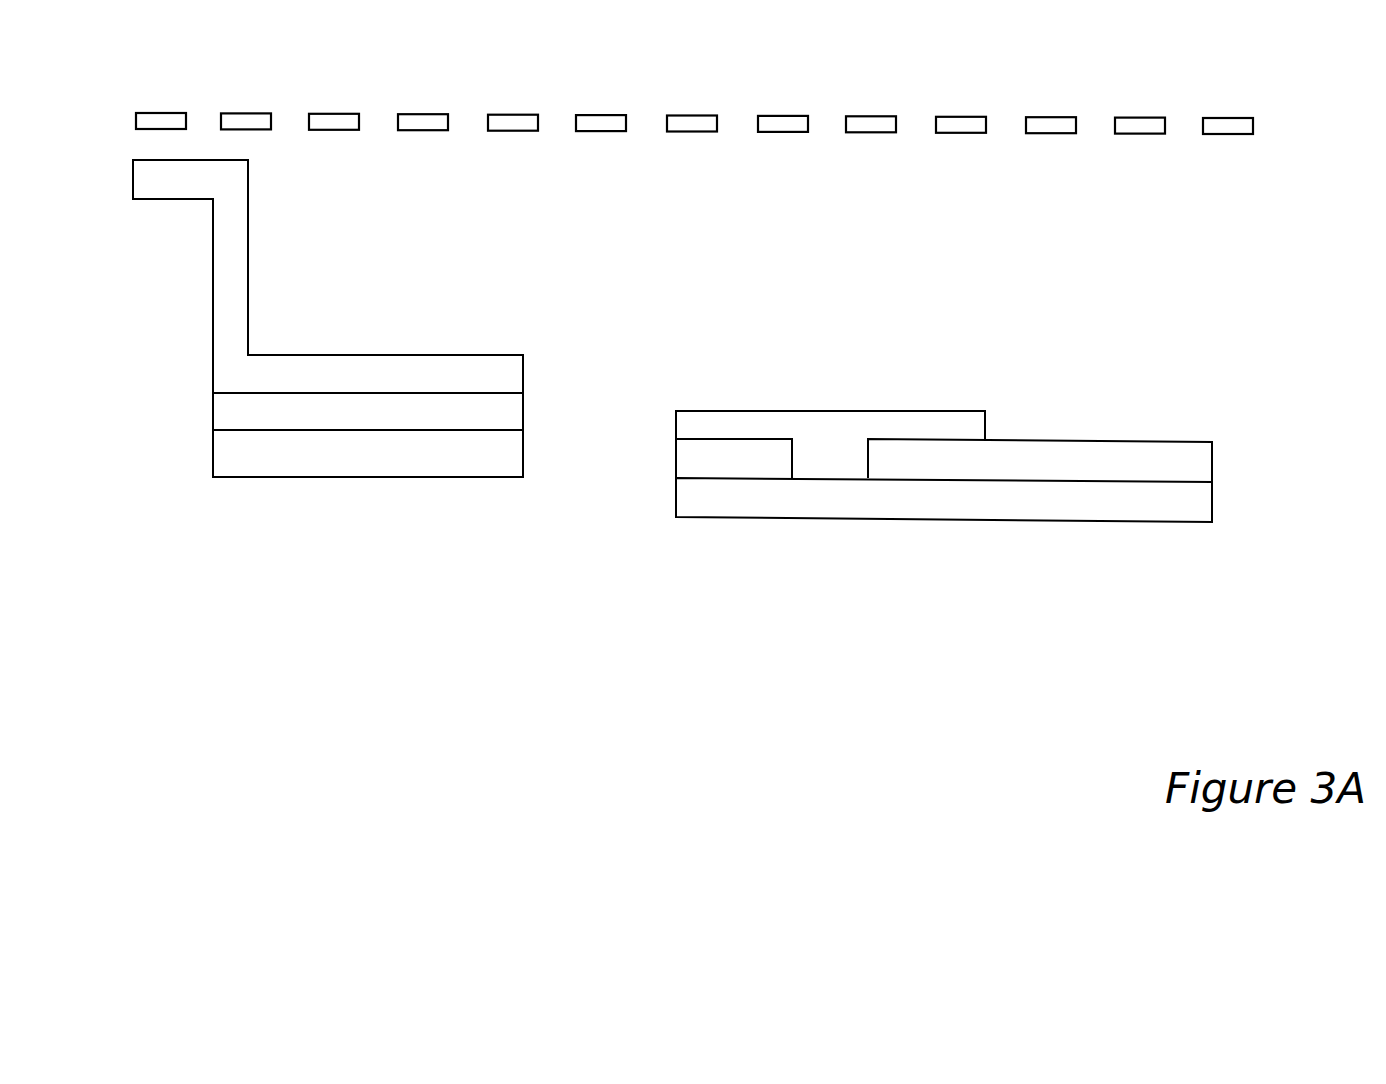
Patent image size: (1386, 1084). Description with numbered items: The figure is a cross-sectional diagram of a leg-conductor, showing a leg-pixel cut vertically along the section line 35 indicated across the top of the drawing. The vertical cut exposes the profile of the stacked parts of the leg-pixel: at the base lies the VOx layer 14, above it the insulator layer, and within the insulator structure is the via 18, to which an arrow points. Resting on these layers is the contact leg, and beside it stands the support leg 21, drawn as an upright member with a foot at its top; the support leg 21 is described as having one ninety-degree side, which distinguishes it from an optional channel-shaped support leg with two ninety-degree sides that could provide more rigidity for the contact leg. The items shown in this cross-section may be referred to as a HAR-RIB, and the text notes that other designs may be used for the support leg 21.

The VOx layer 14 is at (945, 512).
The via 18 is at (770, 462).
The support leg 21 is at (250, 272).
The section line 35 is at (693, 115).